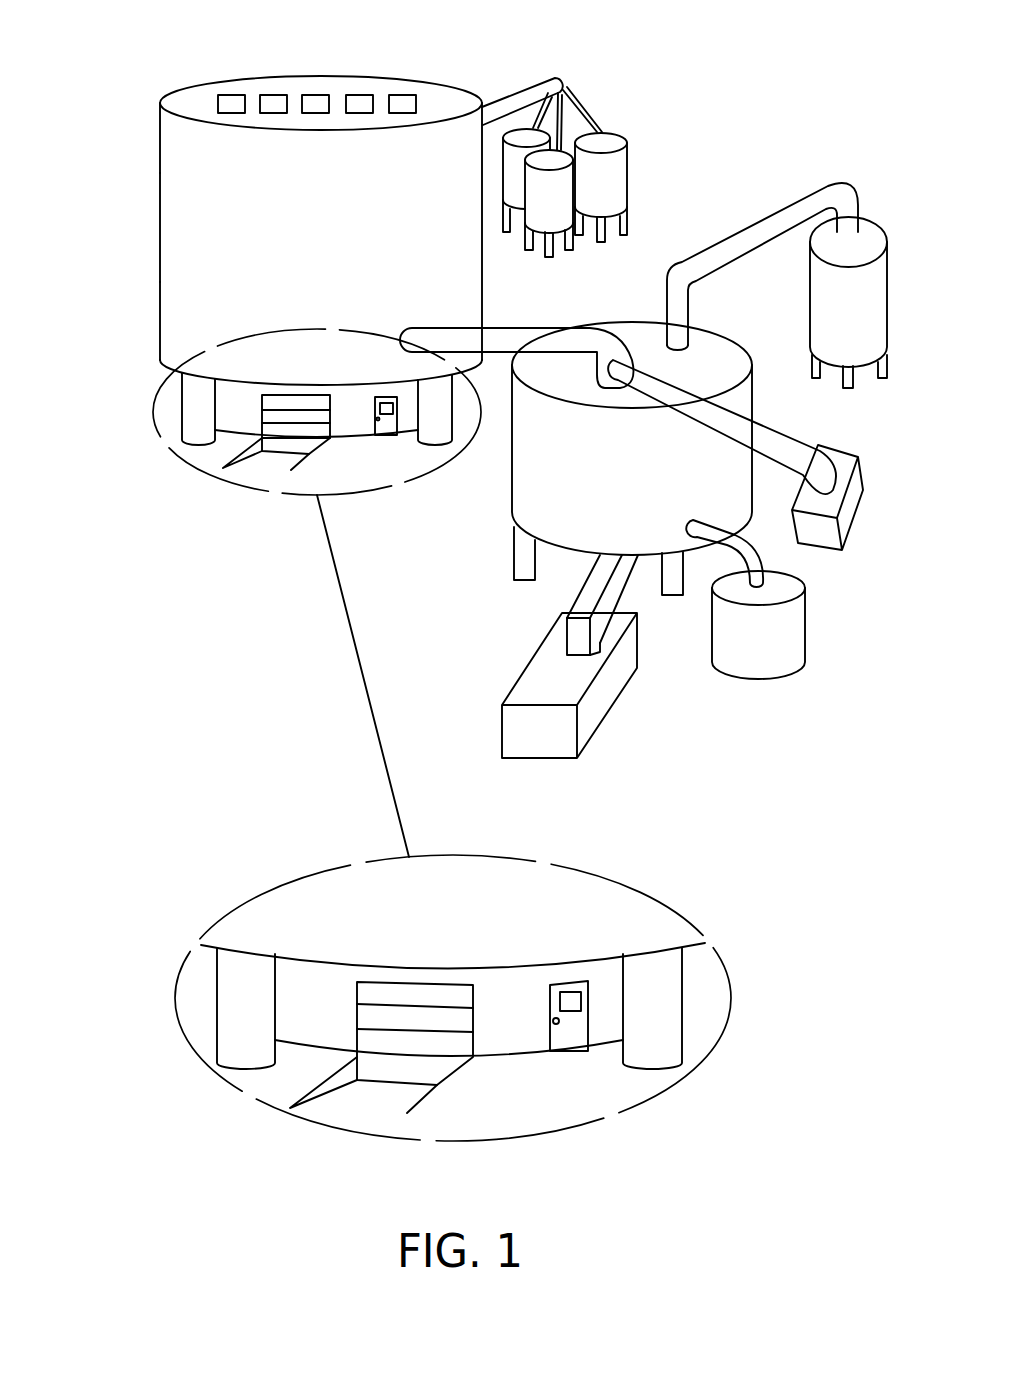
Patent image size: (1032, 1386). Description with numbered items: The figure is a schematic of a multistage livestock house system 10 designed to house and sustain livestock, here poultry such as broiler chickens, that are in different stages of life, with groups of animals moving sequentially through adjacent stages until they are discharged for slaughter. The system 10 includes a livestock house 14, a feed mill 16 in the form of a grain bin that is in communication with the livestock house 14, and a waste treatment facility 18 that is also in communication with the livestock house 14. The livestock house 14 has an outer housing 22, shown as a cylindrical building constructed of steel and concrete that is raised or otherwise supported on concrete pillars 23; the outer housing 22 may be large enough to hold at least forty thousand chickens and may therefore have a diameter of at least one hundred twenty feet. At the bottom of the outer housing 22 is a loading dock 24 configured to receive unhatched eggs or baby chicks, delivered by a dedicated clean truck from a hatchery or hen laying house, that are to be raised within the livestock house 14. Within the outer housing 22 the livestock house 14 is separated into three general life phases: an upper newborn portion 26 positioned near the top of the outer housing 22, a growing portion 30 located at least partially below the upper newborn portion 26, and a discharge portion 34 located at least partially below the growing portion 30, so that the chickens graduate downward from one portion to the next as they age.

The multistage livestock house system 10 is at (206, 48).
The livestock house 14 is at (154, 258).
The feed mill 16 is at (603, 84).
The waste treatment facility 18 is at (651, 249).
The outer housing 22 is at (178, 135).
The concrete pillars 23 is at (193, 437).
The loading dock 24 is at (284, 452).
The upper newborn portion 26 is at (117, 173).
The growing portion 30 is at (117, 282).
The discharge portion 34 is at (117, 363).